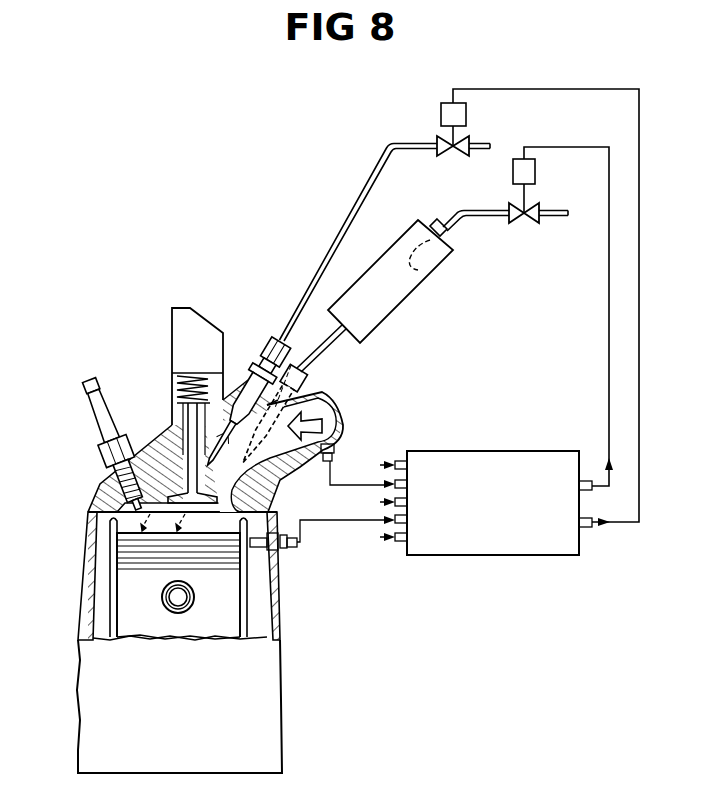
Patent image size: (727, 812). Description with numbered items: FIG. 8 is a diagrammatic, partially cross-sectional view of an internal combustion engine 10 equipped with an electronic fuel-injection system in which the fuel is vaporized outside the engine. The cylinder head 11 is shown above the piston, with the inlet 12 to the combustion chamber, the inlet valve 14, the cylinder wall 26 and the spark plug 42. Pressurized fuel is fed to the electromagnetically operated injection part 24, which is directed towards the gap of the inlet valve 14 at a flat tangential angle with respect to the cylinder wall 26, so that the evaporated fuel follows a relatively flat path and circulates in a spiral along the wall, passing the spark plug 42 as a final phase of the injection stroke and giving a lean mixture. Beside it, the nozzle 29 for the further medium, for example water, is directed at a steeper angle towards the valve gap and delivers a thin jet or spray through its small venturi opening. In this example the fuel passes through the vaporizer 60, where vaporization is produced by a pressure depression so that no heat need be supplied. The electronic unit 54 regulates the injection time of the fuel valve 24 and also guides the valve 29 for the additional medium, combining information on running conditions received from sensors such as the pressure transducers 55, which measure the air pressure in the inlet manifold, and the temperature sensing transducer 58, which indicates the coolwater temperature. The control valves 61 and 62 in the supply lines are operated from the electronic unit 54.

The internal combustion engine 10 is at (263, 721).
The cylinder head 11 is at (92, 495).
The inlet to the combustion chamber 12 is at (292, 530).
The inlet valve 14 is at (205, 503).
The injection part 24 is at (268, 420).
The cylinder wall 26 is at (128, 527).
The nozzle 29 is at (273, 350).
The spark plug 42 is at (94, 468).
The electronic unit 54 is at (490, 540).
The pressure transducers 55 is at (337, 460).
The temperature sensing transducer 58 is at (280, 549).
The vaporizer 60 is at (418, 272).
The control valve 61 is at (531, 222).
The control valve 62 is at (440, 150).